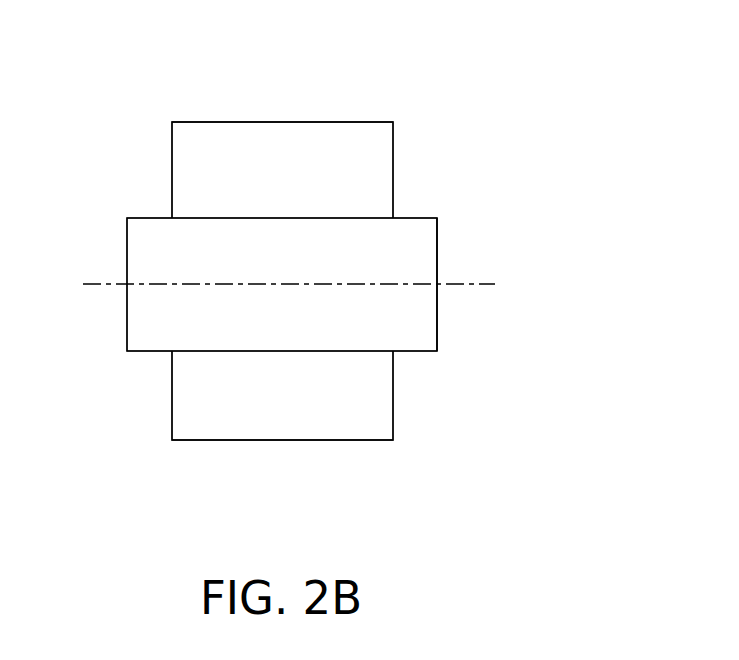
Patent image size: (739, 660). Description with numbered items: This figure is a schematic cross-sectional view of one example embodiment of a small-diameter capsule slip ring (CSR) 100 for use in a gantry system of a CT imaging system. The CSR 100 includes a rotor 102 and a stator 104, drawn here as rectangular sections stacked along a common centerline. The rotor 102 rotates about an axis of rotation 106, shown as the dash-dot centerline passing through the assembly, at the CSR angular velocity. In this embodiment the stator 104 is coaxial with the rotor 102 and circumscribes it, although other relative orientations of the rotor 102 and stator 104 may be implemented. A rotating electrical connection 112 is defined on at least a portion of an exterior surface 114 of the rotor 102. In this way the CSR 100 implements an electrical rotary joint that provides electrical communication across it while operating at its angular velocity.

The capsule slip ring 100 is at (166, 84).
The rotor 102 is at (143, 218).
The stator 104 is at (323, 441).
The axis of rotation 106 is at (483, 280).
The rotating electrical connection 112 is at (437, 343).
The exterior surface 114 is at (437, 248).